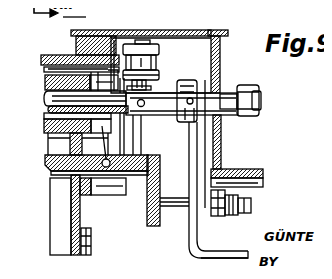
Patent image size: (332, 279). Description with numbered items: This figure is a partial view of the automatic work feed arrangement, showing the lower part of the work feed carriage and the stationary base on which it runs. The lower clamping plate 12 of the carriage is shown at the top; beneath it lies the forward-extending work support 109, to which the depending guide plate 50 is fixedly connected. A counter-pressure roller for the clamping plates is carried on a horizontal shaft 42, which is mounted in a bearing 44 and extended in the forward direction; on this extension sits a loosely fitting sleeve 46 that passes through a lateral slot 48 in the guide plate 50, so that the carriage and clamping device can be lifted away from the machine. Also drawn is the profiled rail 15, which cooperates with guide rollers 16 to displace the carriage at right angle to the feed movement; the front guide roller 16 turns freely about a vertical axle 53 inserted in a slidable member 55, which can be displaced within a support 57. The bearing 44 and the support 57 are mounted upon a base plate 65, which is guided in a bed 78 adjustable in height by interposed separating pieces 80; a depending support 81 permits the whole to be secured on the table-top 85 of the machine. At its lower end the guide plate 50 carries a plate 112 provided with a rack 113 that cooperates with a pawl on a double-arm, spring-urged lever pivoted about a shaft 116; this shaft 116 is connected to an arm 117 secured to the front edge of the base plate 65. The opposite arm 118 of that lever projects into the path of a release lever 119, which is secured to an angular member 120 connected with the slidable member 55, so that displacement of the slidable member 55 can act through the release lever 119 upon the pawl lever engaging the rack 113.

The lower clamping plate 12 is at (67, 30).
The profiled rail 15 is at (40, 55).
The guide rollers 16 is at (153, 47).
The horizontal shaft 42 is at (263, 100).
The bearing 44 is at (129, 138).
The sleeve 46 is at (222, 86).
The slot 48 is at (213, 108).
The guide plate 50 is at (225, 42).
The vertical axle 53 is at (145, 70).
The slidable member 55 is at (157, 92).
The support 57 is at (48, 118).
The base plate 65 is at (44, 164).
The bed 78 is at (118, 182).
The separating pieces 80 is at (73, 202).
The depending support 81 is at (57, 222).
The table-top 85 is at (88, 237).
The work support 109 is at (190, 25).
The plate 112 is at (237, 162).
The rack 113 is at (241, 174).
The shaft 116 is at (258, 200).
The arm 117 is at (147, 219).
The arm of lever 118 is at (218, 205).
The release lever 119 is at (193, 207).
The angular member 120 is at (186, 143).